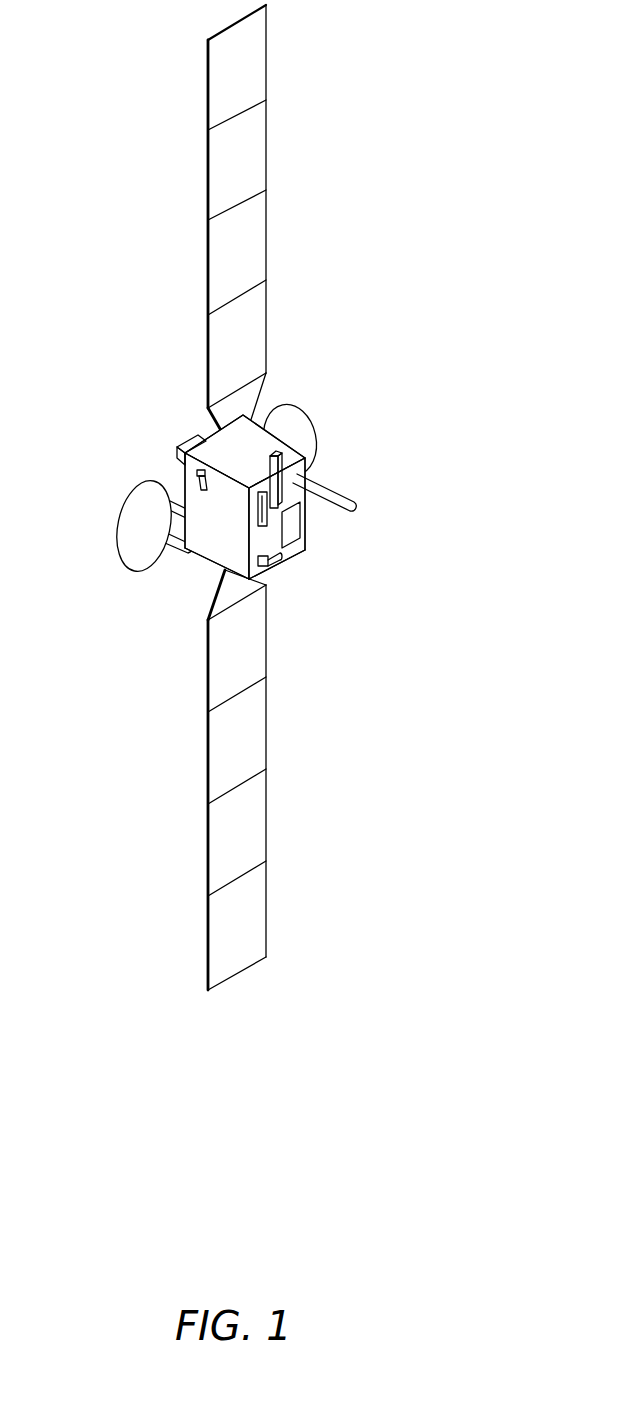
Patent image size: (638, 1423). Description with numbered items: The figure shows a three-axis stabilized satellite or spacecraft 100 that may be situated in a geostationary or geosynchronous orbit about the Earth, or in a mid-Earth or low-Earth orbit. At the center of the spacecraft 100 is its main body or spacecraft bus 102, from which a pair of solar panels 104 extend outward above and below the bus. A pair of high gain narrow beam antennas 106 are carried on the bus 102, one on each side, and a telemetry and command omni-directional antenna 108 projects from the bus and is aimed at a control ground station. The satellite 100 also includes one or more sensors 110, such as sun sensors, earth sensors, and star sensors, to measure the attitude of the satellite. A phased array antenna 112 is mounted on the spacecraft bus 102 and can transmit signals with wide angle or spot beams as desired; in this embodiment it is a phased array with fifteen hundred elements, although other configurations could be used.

The satellite or spacecraft 100 is at (340, 190).
The spacecraft bus 102 is at (300, 472).
The solar panels 104 is at (250, 154).
The high gain narrow beam antennas 106 is at (303, 410).
The telemetry and command omni-directional antenna 108 is at (348, 501).
The sensors 110 is at (198, 458).
The phased array antenna 112 is at (306, 518).